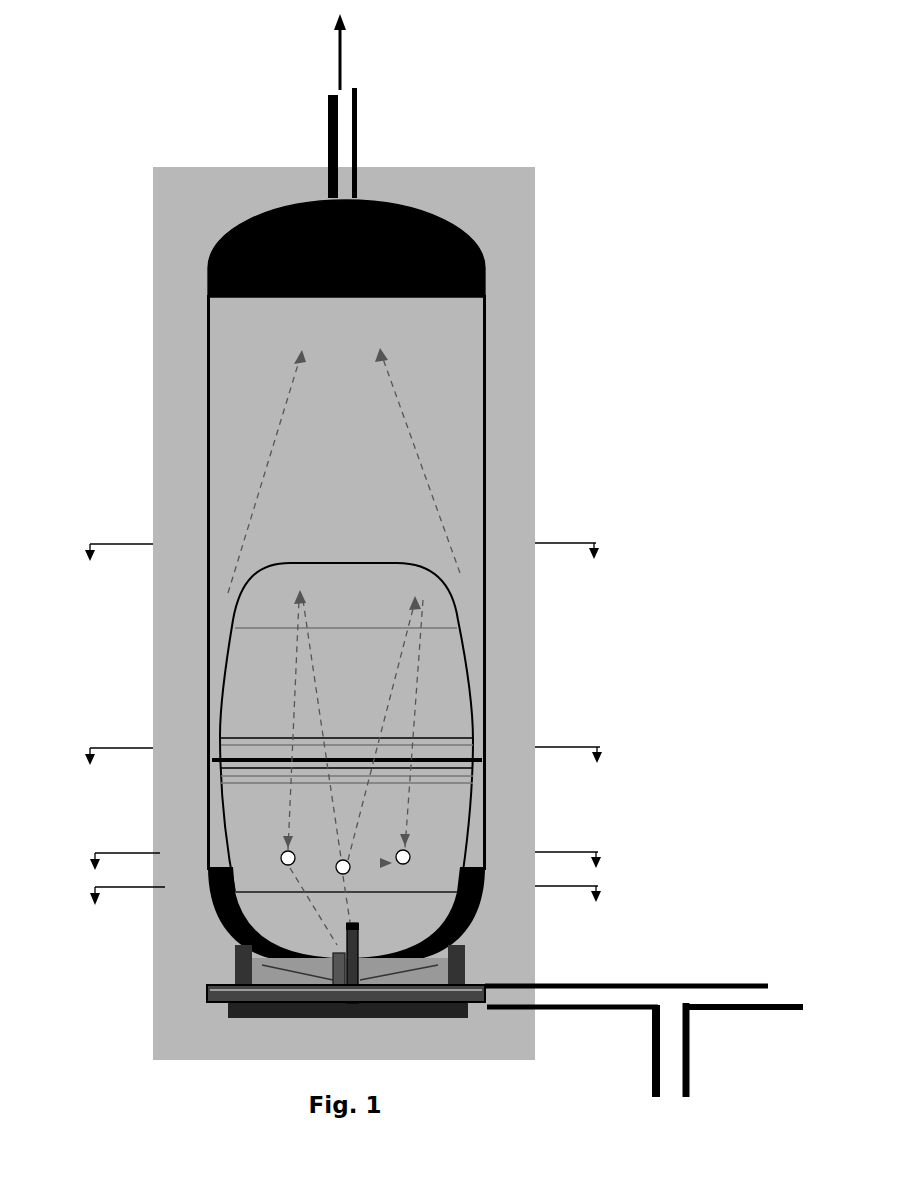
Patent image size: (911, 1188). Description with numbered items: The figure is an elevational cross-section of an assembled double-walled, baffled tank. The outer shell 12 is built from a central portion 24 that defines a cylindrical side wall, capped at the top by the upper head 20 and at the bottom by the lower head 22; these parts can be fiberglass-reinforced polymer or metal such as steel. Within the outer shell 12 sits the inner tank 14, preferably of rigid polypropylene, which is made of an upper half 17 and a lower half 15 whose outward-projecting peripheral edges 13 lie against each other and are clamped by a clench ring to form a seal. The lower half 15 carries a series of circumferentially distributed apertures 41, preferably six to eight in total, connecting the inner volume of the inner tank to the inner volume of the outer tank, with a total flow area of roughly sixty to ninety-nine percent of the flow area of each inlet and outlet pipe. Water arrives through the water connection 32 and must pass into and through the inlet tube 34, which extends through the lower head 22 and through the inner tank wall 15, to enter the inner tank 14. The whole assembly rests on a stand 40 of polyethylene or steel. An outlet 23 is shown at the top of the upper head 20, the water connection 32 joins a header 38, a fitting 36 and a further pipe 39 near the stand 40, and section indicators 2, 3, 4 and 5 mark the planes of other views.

The outer shell 12 is at (487, 428).
The peripheral edges 13 is at (483, 757).
The inner tank 14 is at (462, 624).
The lower half of the inner tank 15 is at (471, 819).
The upper half of the inner tank 17 is at (468, 690).
The upper head 20 is at (487, 271).
The lower head 22 is at (478, 919).
The outlet 23 is at (362, 180).
The central portion 24 is at (487, 521).
The water connection 32 is at (486, 984).
The inlet tube 34 is at (360, 943).
The fitting 36 is at (323, 953).
The header pipe 38 is at (208, 1000).
The inlet pipe 39 is at (690, 1055).
The stand 40 is at (225, 1013).
The apertures 41 is at (283, 865).
The section line 2 is at (344, 749).
The section line 3 is at (345, 889).
The section line 4 is at (340, 544).
The section line 5 is at (345, 855).